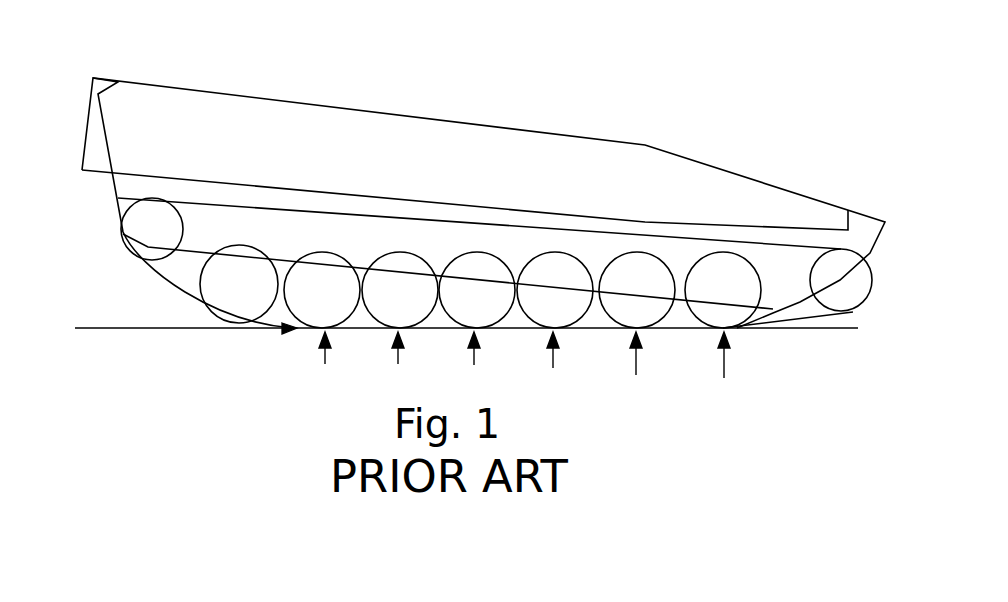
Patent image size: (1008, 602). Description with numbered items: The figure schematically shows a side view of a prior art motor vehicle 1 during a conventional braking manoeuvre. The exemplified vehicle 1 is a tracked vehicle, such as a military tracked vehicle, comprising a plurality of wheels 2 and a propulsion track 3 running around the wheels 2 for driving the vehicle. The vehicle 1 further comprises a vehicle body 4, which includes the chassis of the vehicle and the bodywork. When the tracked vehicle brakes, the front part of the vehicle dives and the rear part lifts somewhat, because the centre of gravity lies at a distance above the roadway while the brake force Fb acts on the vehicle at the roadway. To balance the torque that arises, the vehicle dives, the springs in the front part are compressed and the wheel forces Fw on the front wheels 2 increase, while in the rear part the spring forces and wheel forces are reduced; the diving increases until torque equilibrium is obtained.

The motor vehicle 1 is at (619, 74).
The wheels 2 is at (237, 307).
The propulsion track 3 is at (775, 246).
The vehicle body 4 is at (328, 107).
The brake force Fb is at (300, 334).
The wheel forces Fw is at (725, 362).